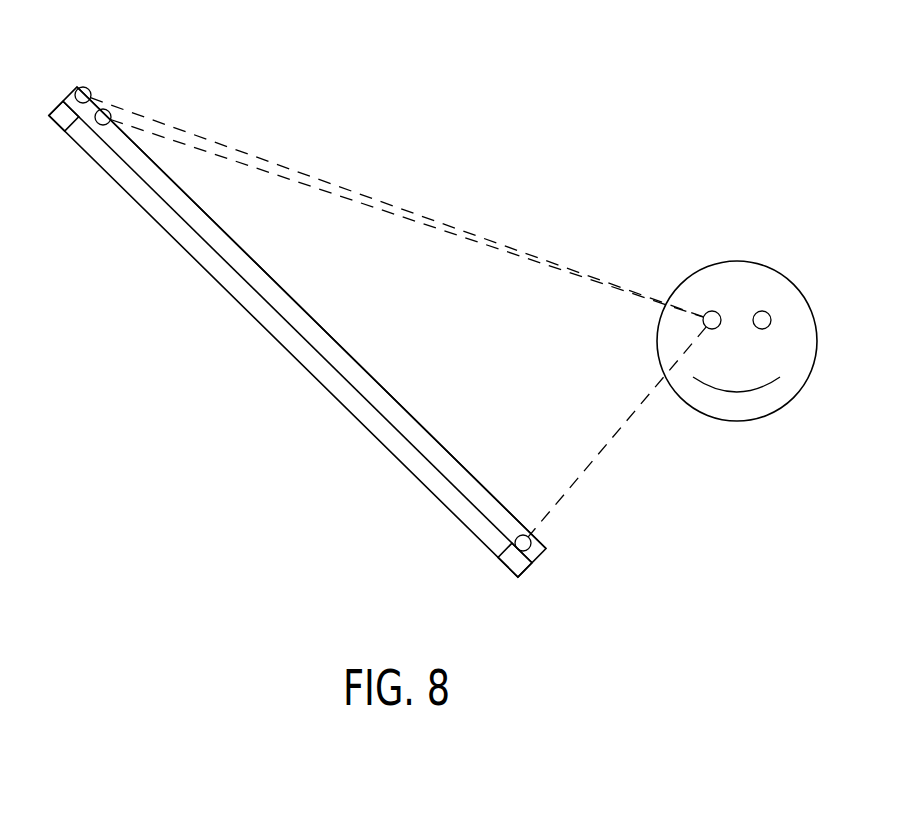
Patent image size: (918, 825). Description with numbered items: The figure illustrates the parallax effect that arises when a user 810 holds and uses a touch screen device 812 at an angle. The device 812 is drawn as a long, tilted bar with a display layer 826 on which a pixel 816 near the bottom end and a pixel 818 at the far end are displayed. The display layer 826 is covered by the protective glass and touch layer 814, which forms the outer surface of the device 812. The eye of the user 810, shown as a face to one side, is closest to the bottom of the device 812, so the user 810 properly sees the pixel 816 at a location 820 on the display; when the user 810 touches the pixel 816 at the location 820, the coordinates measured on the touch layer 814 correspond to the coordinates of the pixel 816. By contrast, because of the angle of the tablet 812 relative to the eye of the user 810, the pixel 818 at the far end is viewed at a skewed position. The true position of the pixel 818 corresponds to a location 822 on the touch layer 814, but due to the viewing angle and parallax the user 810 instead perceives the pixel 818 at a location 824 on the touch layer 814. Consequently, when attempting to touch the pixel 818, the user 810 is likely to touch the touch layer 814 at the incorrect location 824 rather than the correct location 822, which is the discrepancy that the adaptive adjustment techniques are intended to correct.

The user 810 is at (790, 280).
The touch screen device 812 is at (237, 330).
The protective glass and touch layer 814 is at (257, 275).
The pixel 816 is at (505, 558).
The pixel 818 is at (64, 133).
The location 820 is at (533, 550).
The location 822 is at (86, 87).
The location 824 is at (116, 111).
The display layer 826 is at (283, 333).